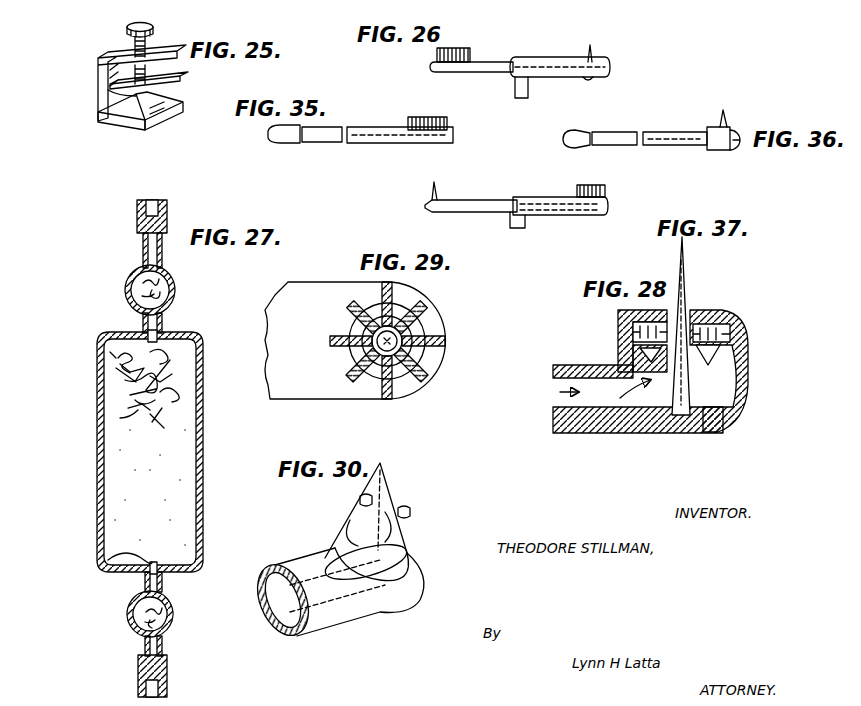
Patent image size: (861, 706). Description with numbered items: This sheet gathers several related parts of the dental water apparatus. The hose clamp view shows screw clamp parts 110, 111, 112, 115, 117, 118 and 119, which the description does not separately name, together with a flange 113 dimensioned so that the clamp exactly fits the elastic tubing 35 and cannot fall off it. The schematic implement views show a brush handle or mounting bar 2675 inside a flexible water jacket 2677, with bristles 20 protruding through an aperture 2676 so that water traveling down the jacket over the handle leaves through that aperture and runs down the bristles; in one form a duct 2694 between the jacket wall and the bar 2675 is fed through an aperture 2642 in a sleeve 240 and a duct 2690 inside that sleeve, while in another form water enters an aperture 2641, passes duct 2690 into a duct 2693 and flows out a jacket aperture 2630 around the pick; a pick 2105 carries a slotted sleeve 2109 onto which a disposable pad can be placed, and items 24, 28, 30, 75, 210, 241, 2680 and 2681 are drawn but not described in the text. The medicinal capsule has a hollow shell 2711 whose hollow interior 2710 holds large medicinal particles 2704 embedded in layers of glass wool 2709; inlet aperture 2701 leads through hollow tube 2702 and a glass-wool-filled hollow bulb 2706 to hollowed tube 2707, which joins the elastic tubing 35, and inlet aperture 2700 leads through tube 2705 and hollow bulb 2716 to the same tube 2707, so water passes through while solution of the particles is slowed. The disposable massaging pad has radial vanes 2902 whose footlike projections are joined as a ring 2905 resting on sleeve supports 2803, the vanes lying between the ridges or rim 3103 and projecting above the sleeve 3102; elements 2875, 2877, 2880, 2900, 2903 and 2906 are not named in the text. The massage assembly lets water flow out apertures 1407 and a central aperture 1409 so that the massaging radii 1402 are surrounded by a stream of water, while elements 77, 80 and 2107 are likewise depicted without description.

In FIG. 25, the thumb screw knob 110 is at (152, 29).
In FIG. 25, the screw shaft 111 is at (132, 43).
In FIG. 25, the clamp plate 112 is at (174, 82).
In FIG. 25, the flange 113 is at (172, 106).
In FIG. 25, the clamp side wall 115 is at (98, 117).
In FIG. 25, the clamp bottom flange 117 is at (130, 130).
In FIG. 25, the clamp inner recess 118 is at (120, 96).
In FIG. 25, the screw threaded end 119 is at (132, 78).
In FIG. 26, the bristles 20 is at (455, 48).
In FIG. 35, the bristles 20 is at (447, 123).
In FIG. 37, the bristles 20 is at (582, 188).
In FIG. 26, the lug 24 is at (590, 79).
In FIG. 26, the spike pin 28 is at (592, 52).
In FIG. 30, the spike pin 28 is at (382, 476).
In FIG. 37, the pin 30 is at (439, 190).
In FIG. 26, the tube end 75 is at (610, 71).
In FIG. 30, the tube end 75 is at (270, 625).
In FIG. 29, the housing 77 is at (326, 284).
In FIG. 30, the housing 77 is at (286, 564).
In FIG. 30, the tube opening 80 is at (272, 590).
In FIG. 26, the body portion 210 is at (560, 78).
In FIG. 37, the sleeve 240 is at (527, 224).
In FIG. 26, the stub neck 241 is at (521, 82).
In FIG. 30, the massaging radii 1402 is at (358, 496).
In FIG. 30, the aperture 1407 is at (345, 534).
In FIG. 30, the central aperture 1409 is at (401, 506).
In FIG. 36, the pick 2105 is at (726, 115).
In FIG. 30, the cone base 2107 is at (425, 536).
In FIG. 36, the sleeve 2109 is at (735, 133).
In FIG. 26, the jacket aperture 2630 is at (605, 56).
In FIG. 26, the aperture 2641 is at (522, 98).
In FIG. 37, the aperture 2642 is at (517, 232).
In FIG. 26, the handle 2675 is at (465, 72).
In FIG. 35, the handle 2675 is at (388, 127).
In FIG. 36, the handle 2675 is at (680, 145).
In FIG. 37, the handle 2675 is at (580, 215).
In FIG. 35, the aperture 2676 is at (455, 135).
In FIG. 37, the aperture 2676 is at (612, 199).
In FIG. 26, the flexible tubing 2677 is at (558, 60).
In FIG. 35, the flexible tubing 2677 is at (378, 143).
In FIG. 36, the flexible tubing 2677 is at (718, 150).
In FIG. 37, the flexible tubing 2677 is at (542, 198).
In FIG. 26, the end wall 2680 is at (608, 75).
In FIG. 37, the end wall 2680 is at (608, 208).
In FIG. 26, the handle 2681 is at (430, 67).
In FIG. 26, the duct 2690 is at (512, 74).
In FIG. 37, the duct 2690 is at (512, 220).
In FIG. 26, the duct 2693 is at (580, 58).
In FIG. 37, the duct 2694 is at (550, 198).
In FIG. 27, the inlet aperture 2700 is at (97, 576).
In FIG. 27, the inlet aperture 2701 is at (100, 352).
In FIG. 27, the hollow tube 2702 is at (175, 336).
In FIG. 27, the medicinal compound particles 2704 is at (125, 410).
In FIG. 27, the tube 2705 is at (160, 584).
In FIG. 27, the hollow bulb 2706 is at (125, 299).
In FIG. 27, the hollowed tube 2707 is at (162, 648).
In FIG. 27, the glass wool 2709 is at (140, 615).
In FIG. 27, the hollow interior 2710 is at (110, 478).
In FIG. 27, the hollow shell 2711 is at (100, 527).
In FIG. 27, the hollow bulb 2716 is at (172, 620).
In FIG. 28, the sleeve supports 2803 is at (712, 362).
In FIG. 28, the bottom wall 2875 is at (560, 414).
In FIG. 28, the tube wall 2877 is at (565, 433).
In FIG. 28, the passage 2880 is at (555, 398).
In FIG. 29, the ring 2900 is at (414, 316).
In FIG. 29, the radial vanes 2902 is at (354, 304).
In FIG. 28, the radial vanes 2902 is at (705, 310).
In FIG. 29, the hub 2903 is at (430, 342).
In FIG. 29, the footlike projection 2905 is at (342, 324).
In FIG. 28, the footlike projection 2905 is at (745, 312).
In FIG. 29, the housing edge 2906 is at (352, 396).
In FIG. 28, the sleeve 3102 is at (744, 352).
In FIG. 28, the ridges 3103 is at (748, 340).
In FIG. 27, the elastic tubing 35 is at (138, 690).